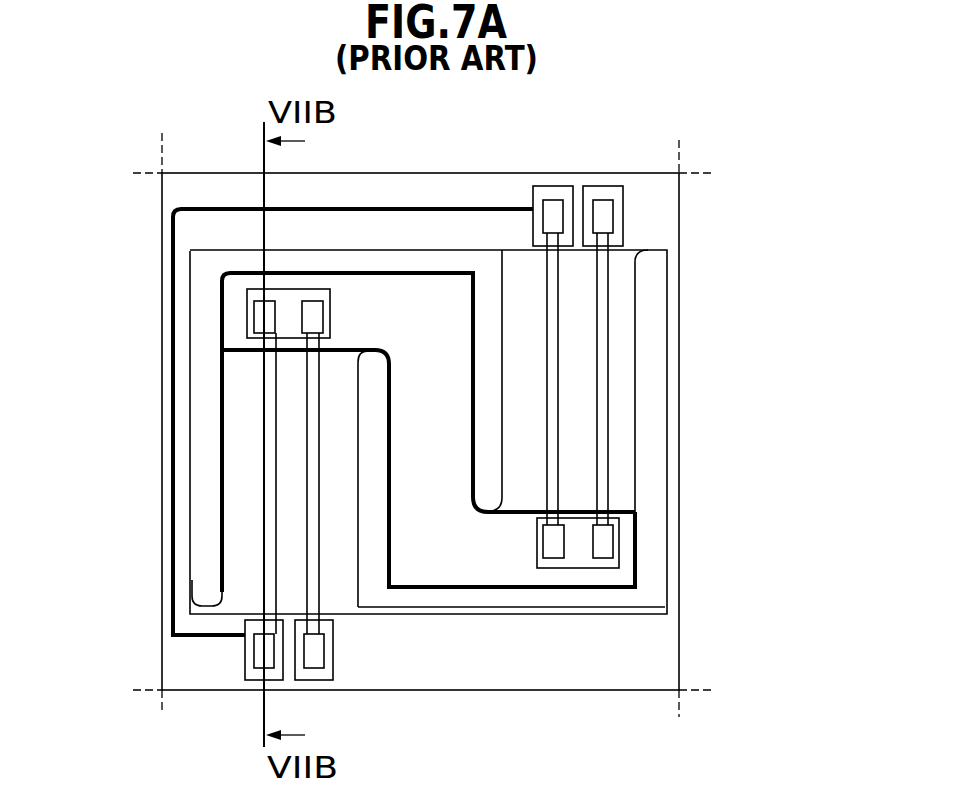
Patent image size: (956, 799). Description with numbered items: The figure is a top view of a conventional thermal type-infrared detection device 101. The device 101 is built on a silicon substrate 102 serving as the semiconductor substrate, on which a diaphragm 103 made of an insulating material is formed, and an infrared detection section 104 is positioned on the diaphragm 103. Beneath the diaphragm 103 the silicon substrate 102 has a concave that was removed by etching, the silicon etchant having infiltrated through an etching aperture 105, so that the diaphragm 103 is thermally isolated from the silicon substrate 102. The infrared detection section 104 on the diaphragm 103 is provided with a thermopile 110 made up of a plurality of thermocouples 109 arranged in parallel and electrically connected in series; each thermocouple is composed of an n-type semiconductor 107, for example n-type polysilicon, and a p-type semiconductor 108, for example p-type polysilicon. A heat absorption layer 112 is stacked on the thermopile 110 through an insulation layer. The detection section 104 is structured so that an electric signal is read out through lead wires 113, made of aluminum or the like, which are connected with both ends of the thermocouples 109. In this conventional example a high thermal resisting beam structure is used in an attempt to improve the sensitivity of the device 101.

The thermal type-infrared detection device 101 is at (722, 193).
The silicon substrate 102 is at (681, 636).
The diaphragm 103 is at (639, 435).
The infrared detection section 104 is at (562, 590).
The etching aperture 105 is at (657, 508).
The n-type semiconductor 107 is at (268, 440).
The p-type semiconductor 108 is at (313, 373).
The thermocouples 109 is at (92, 367).
The thermopile 110 is at (223, 662).
The heat absorption layer 112 is at (458, 560).
The lead wires 113 is at (178, 563).